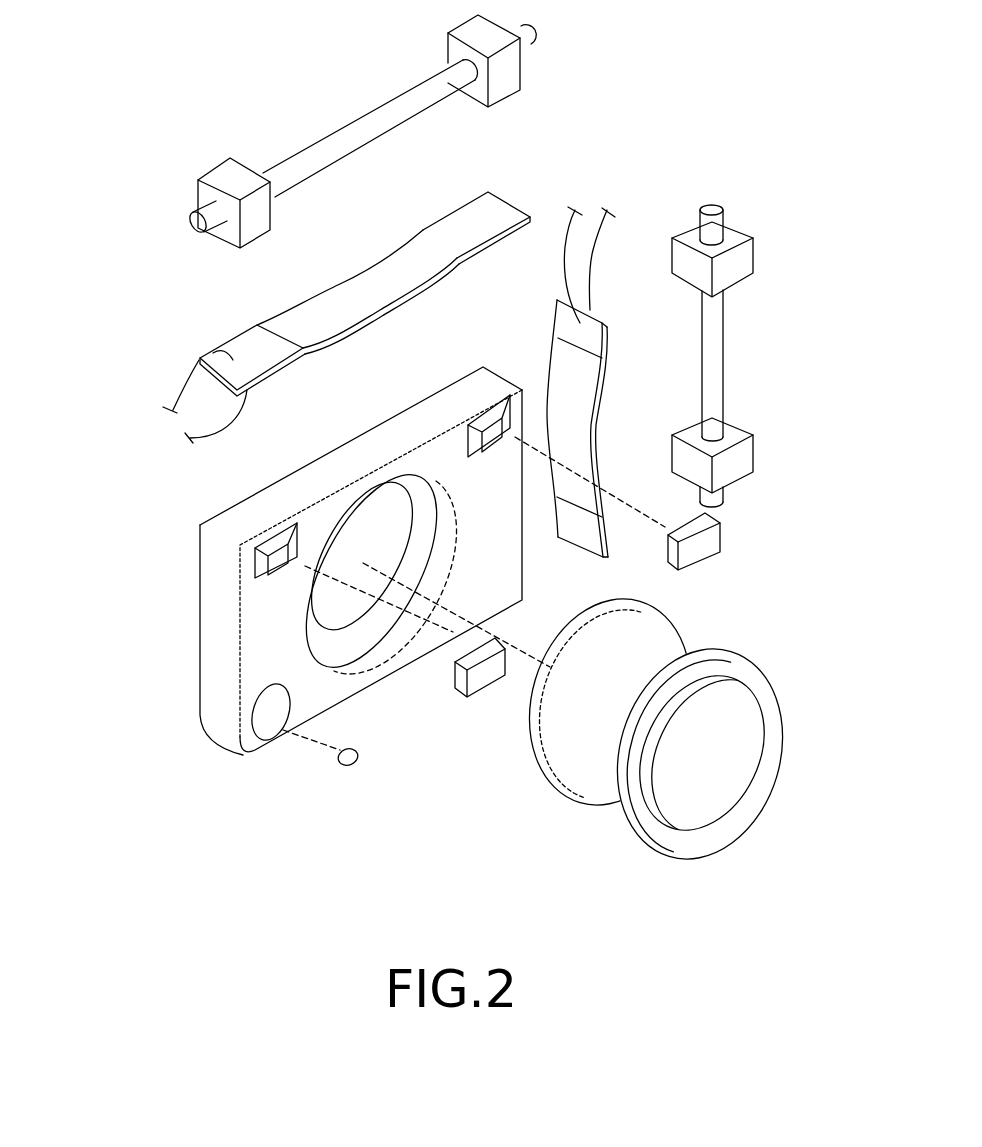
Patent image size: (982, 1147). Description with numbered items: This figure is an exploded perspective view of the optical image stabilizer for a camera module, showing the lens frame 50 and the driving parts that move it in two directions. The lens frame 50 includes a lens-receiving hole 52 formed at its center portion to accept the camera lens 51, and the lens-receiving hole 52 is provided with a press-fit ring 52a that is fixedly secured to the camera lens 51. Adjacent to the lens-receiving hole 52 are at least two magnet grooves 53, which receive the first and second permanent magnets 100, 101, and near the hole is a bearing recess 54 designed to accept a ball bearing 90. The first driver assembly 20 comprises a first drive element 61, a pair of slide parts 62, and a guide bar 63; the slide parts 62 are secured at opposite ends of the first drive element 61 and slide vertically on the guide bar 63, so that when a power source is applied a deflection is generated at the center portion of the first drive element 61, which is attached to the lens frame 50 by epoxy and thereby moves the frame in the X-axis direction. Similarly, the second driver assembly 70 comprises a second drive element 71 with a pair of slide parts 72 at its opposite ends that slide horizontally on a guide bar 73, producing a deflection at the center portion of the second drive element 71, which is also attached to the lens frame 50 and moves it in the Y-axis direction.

The driving unit 20 is at (823, 357).
The lens frame 50 is at (110, 567).
The camera lens 51 is at (537, 773).
The lens-receiving hole 52 is at (306, 616).
The press-fit ring 52a is at (620, 820).
The magnet groove 53 is at (255, 573).
The bearing recess 54 is at (262, 712).
The first drive element 61 is at (606, 322).
The slide parts 62 is at (735, 268).
The guide bar 63 is at (722, 212).
The fixing unit 70 is at (90, 148).
The second drive element 71 is at (253, 338).
The slide parts 72 is at (467, 32).
The guide bar 73 is at (327, 157).
The ball bearing 90 is at (360, 758).
The first permanent magnet 100 is at (453, 678).
The second permanent magnet 101 is at (710, 538).